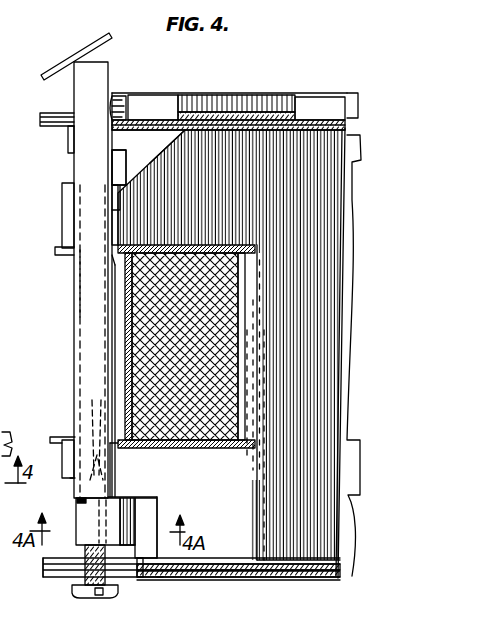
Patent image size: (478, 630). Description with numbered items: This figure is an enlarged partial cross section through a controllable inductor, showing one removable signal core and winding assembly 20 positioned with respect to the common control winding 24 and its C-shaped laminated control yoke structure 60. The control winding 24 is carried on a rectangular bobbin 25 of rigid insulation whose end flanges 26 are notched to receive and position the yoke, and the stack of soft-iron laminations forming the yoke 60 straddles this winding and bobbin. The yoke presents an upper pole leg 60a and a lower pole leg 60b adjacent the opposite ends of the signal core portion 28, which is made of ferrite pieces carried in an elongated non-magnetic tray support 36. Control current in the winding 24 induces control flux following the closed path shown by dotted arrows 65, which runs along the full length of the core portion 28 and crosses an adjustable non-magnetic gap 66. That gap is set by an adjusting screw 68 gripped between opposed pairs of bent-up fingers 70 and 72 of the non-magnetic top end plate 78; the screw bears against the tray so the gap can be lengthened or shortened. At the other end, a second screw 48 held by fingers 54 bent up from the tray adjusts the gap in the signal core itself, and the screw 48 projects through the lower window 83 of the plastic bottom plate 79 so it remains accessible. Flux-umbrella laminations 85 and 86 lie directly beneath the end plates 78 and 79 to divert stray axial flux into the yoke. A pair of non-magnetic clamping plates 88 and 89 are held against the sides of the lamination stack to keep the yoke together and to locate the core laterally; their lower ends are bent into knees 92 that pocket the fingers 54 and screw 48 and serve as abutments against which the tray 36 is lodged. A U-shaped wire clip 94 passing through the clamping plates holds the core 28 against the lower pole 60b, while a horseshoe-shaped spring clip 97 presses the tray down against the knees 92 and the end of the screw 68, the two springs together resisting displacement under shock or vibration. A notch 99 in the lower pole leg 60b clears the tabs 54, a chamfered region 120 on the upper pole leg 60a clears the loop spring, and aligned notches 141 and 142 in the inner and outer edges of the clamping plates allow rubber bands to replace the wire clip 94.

The signal core and winding assembly 20 is at (68, 338).
The control winding 24 is at (222, 377).
The bobbin 25 is at (124, 307).
The end flanges 26 is at (257, 246).
The signal core portion 28 is at (74, 286).
The tray support 36 is at (88, 350).
The screw 48 is at (91, 598).
The fingers 54 is at (90, 516).
The control yoke structure 60 is at (227, 335).
The upper pole leg 60a is at (133, 215).
The lower pole leg 60b is at (133, 470).
The control flux path 65 is at (93, 255).
The non-magnetic gap 66 is at (113, 211).
The adjusting screw 68 is at (202, 97).
The fingers 70 is at (140, 98).
The fingers 72 is at (307, 100).
The top end plate 78 is at (58, 115).
The bottom plate 79 is at (287, 565).
The lower window 83 is at (163, 576).
The lamination shield 85 is at (66, 138).
The lamination shield 86 is at (40, 122).
The clamping plate 88 is at (8, 481).
The clamping plate 89 is at (356, 198).
The knees 92 is at (68, 565).
The wire clip 94 is at (68, 485).
The spring clip 97 is at (109, 44).
The notch 99 is at (148, 514).
The chamfered region 120 is at (166, 152).
The notch 141 is at (150, 177).
The notch 142 is at (345, 169).